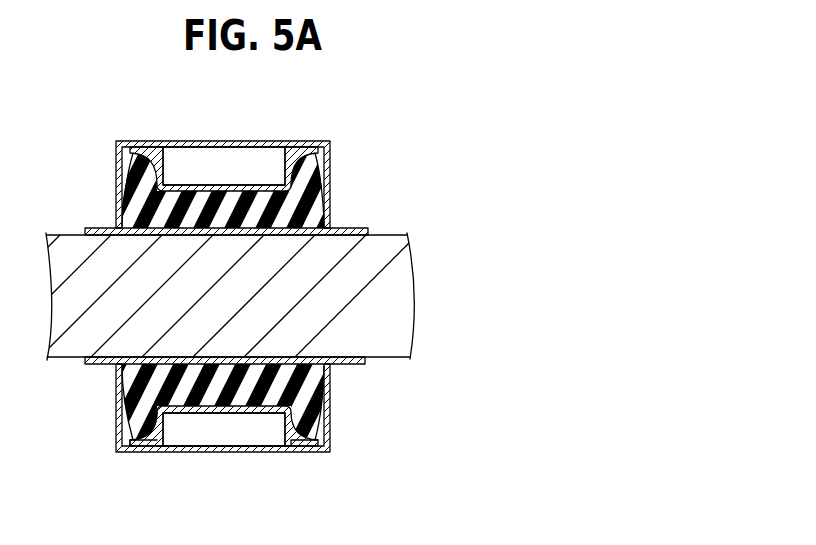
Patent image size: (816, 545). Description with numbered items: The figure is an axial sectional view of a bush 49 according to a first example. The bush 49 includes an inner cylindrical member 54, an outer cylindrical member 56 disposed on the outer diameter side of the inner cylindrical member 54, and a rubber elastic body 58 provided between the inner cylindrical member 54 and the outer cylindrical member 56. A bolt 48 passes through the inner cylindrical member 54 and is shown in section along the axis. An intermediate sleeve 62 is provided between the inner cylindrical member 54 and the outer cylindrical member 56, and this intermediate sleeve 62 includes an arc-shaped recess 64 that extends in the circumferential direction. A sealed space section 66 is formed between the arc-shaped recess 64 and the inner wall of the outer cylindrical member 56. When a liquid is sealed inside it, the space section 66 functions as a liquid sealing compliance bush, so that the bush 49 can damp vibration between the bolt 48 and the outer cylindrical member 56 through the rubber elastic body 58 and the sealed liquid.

The bolt 48 is at (390, 284).
The bush 49 is at (251, 299).
The inner cylindrical member 54 is at (362, 232).
The outer cylindrical member 56 is at (326, 452).
The rubber elastic body 58 is at (310, 388).
The intermediate sleeve 62 is at (304, 448).
The arc-shaped recess 64 is at (166, 447).
The space section 66 is at (231, 164).